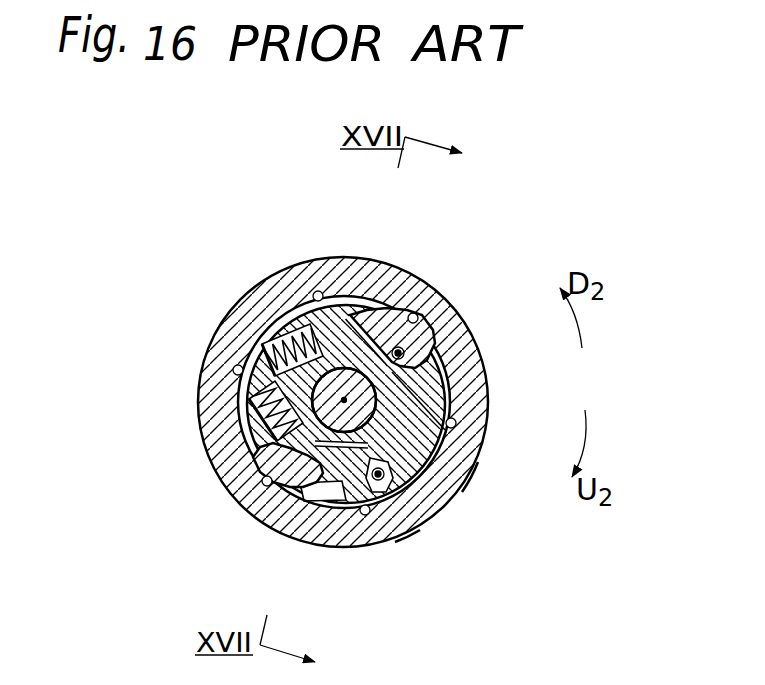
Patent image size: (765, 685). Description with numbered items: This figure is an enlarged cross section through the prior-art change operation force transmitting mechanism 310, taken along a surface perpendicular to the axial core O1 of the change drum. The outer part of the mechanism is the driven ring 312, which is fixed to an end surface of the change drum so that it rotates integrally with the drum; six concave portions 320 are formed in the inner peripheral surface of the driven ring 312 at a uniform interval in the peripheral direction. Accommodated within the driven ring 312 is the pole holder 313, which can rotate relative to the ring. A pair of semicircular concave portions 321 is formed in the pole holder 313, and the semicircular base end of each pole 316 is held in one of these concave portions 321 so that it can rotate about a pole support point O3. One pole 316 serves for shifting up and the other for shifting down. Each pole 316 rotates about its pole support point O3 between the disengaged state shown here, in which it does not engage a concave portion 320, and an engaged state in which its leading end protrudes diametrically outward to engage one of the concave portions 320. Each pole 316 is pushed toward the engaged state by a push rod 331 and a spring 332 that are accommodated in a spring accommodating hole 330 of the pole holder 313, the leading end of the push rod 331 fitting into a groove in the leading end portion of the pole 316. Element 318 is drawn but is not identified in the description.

The change operation force transmitting mechanism 310 is at (157, 255).
The driven ring 312 is at (467, 357).
The pole holder 313 is at (450, 493).
The pole 316 is at (400, 317).
The housing wall 318 is at (473, 458).
The concave portion 320 is at (315, 291).
The semicircular concave portion 321 is at (455, 352).
The spring accommodating hole 330 is at (320, 330).
The push rod 331 is at (288, 340).
The spring 332 is at (267, 352).
The axial core O1 is at (340, 398).
The pole support point O3 is at (453, 327).